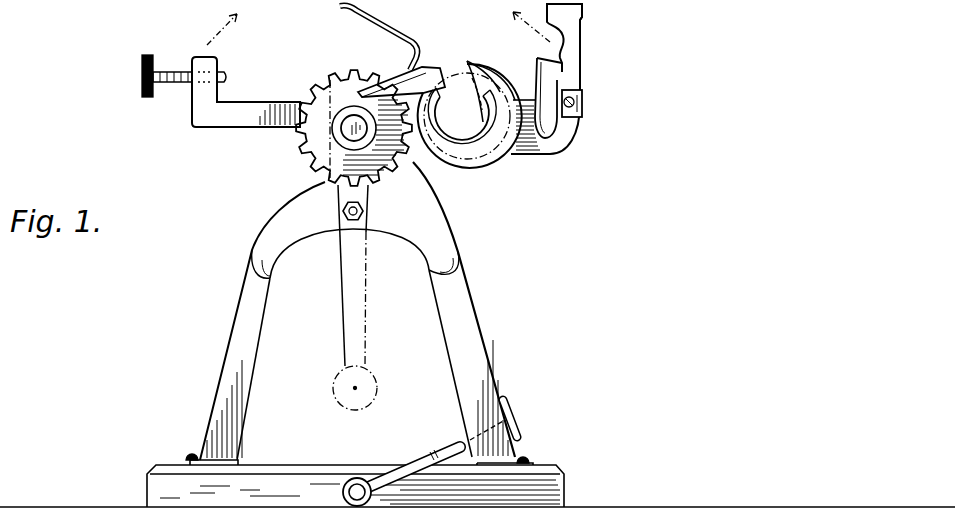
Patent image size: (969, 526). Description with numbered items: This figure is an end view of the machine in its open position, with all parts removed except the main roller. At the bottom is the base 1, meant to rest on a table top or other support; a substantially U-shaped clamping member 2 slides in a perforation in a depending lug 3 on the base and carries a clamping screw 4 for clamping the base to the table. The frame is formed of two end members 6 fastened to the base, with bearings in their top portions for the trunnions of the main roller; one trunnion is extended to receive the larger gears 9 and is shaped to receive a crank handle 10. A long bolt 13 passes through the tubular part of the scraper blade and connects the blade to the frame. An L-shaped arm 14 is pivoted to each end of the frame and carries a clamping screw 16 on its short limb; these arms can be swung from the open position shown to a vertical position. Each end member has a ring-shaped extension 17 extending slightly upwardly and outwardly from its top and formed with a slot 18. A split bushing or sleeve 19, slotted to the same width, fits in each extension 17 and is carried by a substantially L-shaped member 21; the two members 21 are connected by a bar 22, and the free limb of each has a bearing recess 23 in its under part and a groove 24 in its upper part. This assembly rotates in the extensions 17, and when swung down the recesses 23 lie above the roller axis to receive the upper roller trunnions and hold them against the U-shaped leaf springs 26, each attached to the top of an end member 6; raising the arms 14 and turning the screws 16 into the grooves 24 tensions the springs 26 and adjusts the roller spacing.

The base 1 is at (564, 477).
The clamping member 2 is at (398, 462).
The depending lug 3 is at (356, 470).
The clamping screw 4 is at (518, 412).
The end member 6 is at (466, 270).
The larger gear 9 is at (302, 152).
The crank handle 10 is at (343, 303).
The long bolt 13 is at (364, 210).
The L-shaped arm 14 is at (192, 114).
The clamping screw 16 is at (142, 82).
The ring-shaped extension 17 is at (485, 160).
The slot 18 is at (440, 77).
The split bushing or sleeve 19 is at (480, 120).
The L-shaped member 21 is at (574, 45).
The bar 22 is at (583, 100).
The bearing recess 23 is at (578, 63).
The groove 24 is at (584, 14).
The leaf spring 26 is at (340, 7).